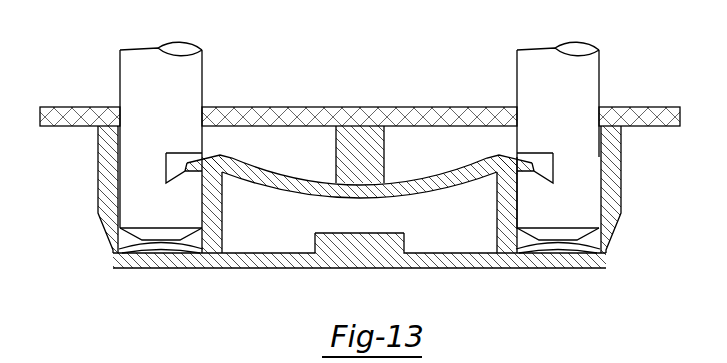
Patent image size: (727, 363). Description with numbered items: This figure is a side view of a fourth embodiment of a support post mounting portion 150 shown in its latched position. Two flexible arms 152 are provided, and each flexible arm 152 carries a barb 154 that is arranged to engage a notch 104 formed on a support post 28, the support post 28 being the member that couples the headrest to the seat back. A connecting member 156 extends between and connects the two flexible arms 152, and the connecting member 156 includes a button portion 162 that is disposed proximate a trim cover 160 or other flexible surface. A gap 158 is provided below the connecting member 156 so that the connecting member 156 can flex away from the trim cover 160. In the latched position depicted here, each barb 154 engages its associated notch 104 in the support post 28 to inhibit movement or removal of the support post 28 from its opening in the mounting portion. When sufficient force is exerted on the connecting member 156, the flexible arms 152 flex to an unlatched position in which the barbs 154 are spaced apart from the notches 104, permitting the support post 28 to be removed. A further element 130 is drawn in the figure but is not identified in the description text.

The support post 28 is at (125, 76).
The notch 104 is at (168, 151).
The seal 130 is at (165, 247).
The support post mounting portion 150 is at (110, 74).
The flexible arm 152 is at (222, 222).
The barb 154 is at (191, 165).
The connecting member 156 is at (298, 179).
The gap 158 is at (345, 228).
The trim cover 160 is at (370, 107).
The button portion 162 is at (386, 156).